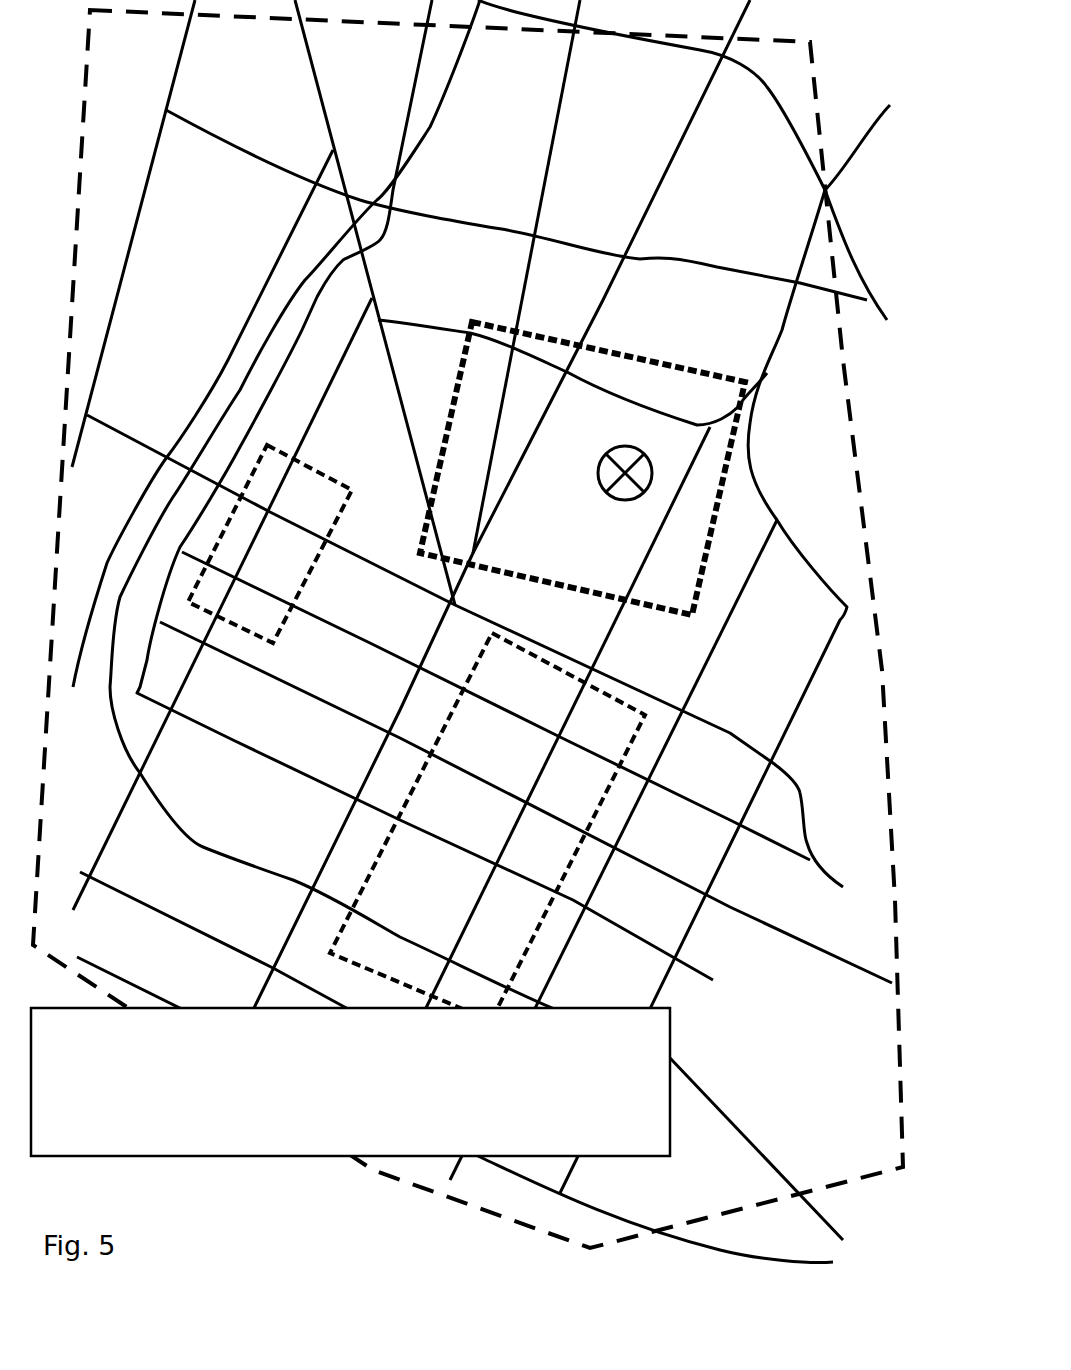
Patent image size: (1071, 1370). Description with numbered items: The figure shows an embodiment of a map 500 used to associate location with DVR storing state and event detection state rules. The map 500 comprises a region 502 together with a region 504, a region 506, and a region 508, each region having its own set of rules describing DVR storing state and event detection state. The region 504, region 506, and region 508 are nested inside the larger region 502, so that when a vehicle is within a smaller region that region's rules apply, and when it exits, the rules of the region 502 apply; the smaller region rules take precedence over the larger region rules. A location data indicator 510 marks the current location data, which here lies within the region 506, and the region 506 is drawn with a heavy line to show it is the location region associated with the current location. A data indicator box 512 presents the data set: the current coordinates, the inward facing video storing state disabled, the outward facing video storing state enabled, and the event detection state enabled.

The map 500 is at (862, 193).
The region 502 is at (810, 66).
The region 504 is at (305, 585).
The region 506 is at (667, 364).
The region 508 is at (637, 712).
The location data indicator 510 is at (608, 492).
The data indicator box 512 is at (672, 1055).